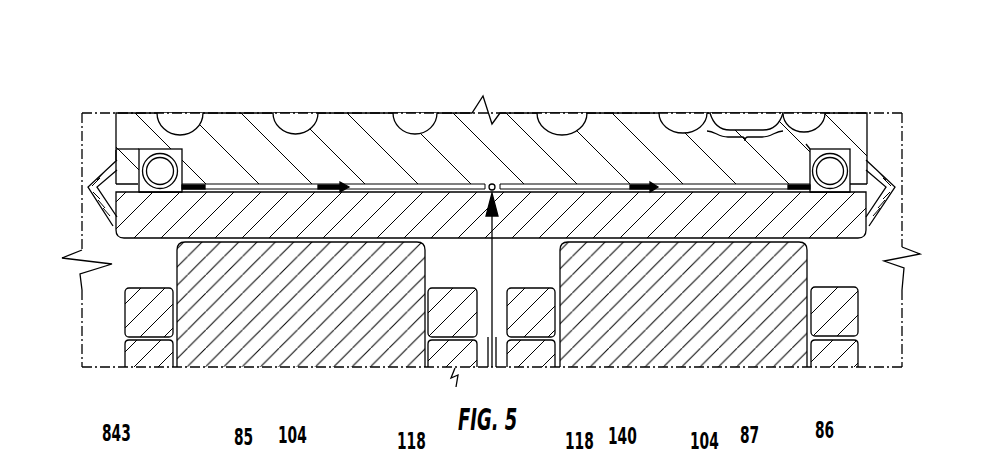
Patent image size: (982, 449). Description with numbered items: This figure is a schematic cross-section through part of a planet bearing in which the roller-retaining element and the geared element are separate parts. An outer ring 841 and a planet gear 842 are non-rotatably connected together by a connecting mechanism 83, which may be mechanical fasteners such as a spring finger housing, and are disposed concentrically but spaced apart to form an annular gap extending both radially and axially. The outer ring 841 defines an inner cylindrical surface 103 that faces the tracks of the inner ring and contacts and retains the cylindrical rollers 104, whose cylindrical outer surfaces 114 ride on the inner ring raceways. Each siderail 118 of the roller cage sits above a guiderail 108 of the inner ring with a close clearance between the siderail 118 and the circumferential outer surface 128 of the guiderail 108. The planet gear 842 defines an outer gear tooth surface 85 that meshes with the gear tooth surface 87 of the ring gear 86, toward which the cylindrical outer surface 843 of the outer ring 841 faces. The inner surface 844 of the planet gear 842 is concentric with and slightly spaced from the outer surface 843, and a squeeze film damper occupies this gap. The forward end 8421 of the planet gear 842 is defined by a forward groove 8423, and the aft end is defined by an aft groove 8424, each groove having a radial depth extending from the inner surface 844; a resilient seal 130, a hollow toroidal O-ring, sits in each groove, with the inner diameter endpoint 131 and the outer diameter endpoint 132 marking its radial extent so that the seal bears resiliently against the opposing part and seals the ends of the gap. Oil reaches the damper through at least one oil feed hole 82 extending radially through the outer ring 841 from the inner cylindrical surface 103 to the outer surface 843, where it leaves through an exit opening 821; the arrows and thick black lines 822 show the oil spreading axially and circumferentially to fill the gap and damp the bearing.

The oil feed hole 82 is at (490, 220).
The connecting mechanism 83 is at (106, 176).
The gear tooth surface 85 is at (783, 112).
The ring gear 86 is at (808, 128).
The gear tooth surface 87 is at (745, 149).
The inner cylindrical surface 103 is at (145, 242).
The rollers 104 is at (328, 272).
The guiderail 108 is at (155, 357).
The cylindrical outer surface 114 is at (200, 232).
The siderail 118 is at (126, 312).
The circumferential outer surface 128 is at (156, 337).
The resilient seal 130 is at (183, 157).
The inner diameter endpoint 131 is at (158, 198).
The outer diameter endpoint 132 is at (160, 148).
The exit opening 821 is at (509, 184).
The oil flow arrows 822 is at (269, 184).
The outer ring 841 is at (840, 228).
The planet gear 842 is at (500, 137).
The outer surface 843 is at (480, 182).
The inner surface 844 is at (500, 191).
The forward end 8421 is at (117, 158).
The forward groove 8423 is at (140, 149).
The aft groove 8424 is at (810, 148).